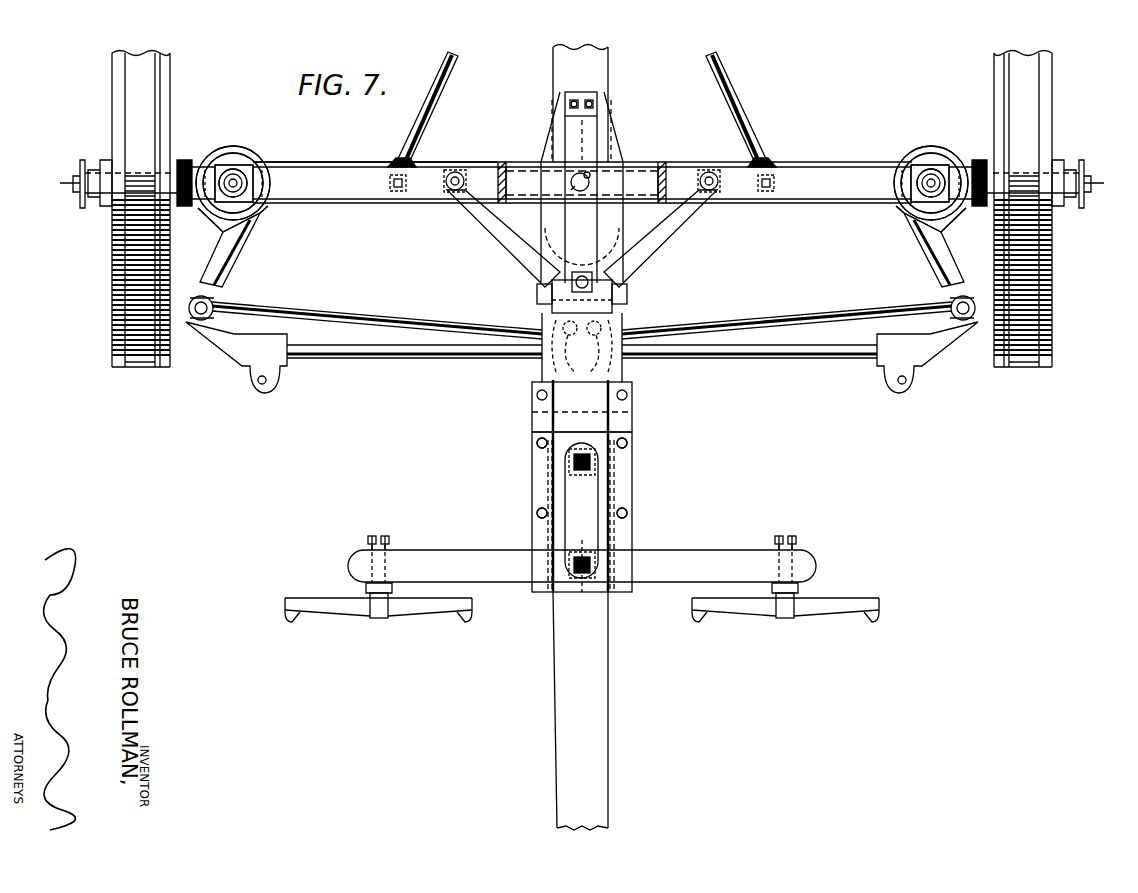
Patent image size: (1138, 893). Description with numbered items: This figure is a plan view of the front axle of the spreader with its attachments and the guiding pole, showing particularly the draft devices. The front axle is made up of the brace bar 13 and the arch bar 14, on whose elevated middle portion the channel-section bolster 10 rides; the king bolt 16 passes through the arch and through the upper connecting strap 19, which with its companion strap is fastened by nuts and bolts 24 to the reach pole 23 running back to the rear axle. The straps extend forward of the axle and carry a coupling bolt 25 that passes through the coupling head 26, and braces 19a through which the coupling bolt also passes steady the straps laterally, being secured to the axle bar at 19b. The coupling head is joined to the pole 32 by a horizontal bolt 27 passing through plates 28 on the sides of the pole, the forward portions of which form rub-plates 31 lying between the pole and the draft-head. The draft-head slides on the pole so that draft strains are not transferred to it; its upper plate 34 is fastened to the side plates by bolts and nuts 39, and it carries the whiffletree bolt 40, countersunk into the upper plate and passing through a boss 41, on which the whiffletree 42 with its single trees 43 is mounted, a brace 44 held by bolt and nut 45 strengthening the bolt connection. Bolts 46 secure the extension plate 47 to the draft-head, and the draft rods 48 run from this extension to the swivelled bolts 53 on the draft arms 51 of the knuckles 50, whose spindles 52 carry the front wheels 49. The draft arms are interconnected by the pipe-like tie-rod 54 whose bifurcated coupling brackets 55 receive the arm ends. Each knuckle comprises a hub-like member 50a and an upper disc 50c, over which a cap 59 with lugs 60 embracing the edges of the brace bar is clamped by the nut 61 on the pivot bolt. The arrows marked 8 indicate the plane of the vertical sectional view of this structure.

The section line 8 is at (592, 81).
The bolster 10 is at (518, 170).
The brace bar 13 is at (335, 174).
The arch bar 14 is at (302, 162).
The king bolt 16 is at (590, 176).
The upper connecting strap 19 is at (592, 237).
The braces 19a is at (702, 266).
The brace securing points 19b is at (707, 172).
The reach pole 23 is at (598, 78).
The nuts and bolts 24 is at (565, 104).
The coupling bolt 25 is at (595, 282).
The coupling head 26 is at (628, 294).
The horizontal bolt 27 is at (537, 299).
The plates 28 is at (552, 420).
The rub-plates 31 is at (610, 374).
The pole 32 is at (553, 672).
The upper plate 34 is at (620, 536).
The bolts and nuts 39 is at (536, 513).
The whiffletree bolt 40 is at (584, 592).
The boss 41 is at (584, 556).
The whiffletree 42 is at (448, 550).
The single trees 43 is at (352, 618).
The brace 44 is at (572, 494).
The bolt and nut 45 is at (574, 462).
The bolts 46 is at (536, 398).
The extension plate 47 is at (640, 388).
The draft rods 48 is at (440, 320).
The front wheels 49 is at (112, 300).
The knuckles 50 is at (262, 158).
The hub-like member 50a is at (965, 132).
The upper disc 50c is at (900, 208).
The draft arms 51 is at (236, 262).
The spindles 52 is at (78, 183).
The swivelled bolts 53 is at (224, 299).
The tie-rod 54 is at (380, 358).
The coupling brackets 55 is at (240, 350).
The cap 59 is at (228, 170).
The lugs 60 is at (272, 160).
The nut 61 is at (233, 168).